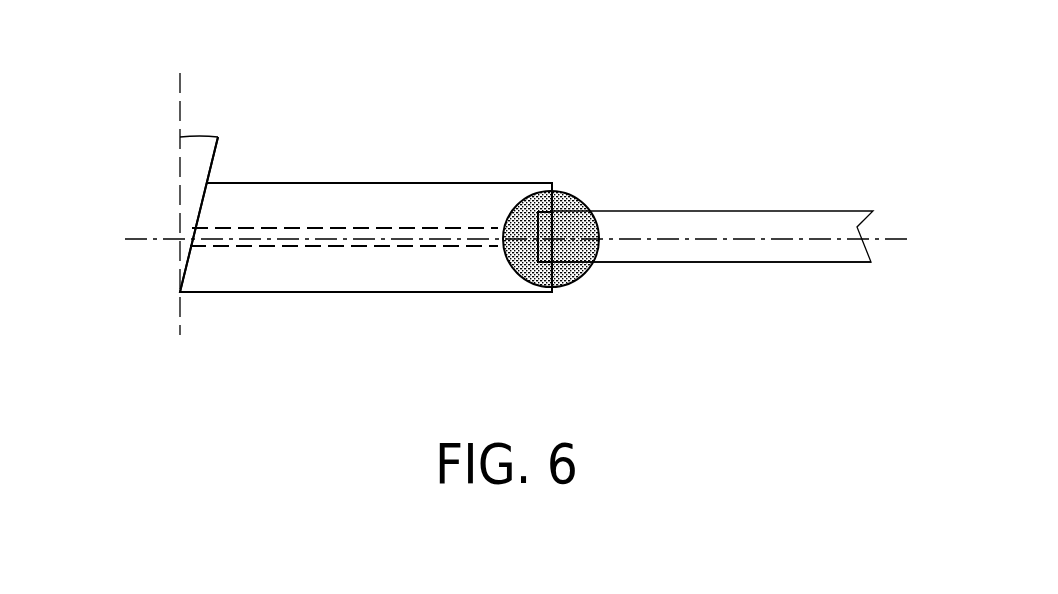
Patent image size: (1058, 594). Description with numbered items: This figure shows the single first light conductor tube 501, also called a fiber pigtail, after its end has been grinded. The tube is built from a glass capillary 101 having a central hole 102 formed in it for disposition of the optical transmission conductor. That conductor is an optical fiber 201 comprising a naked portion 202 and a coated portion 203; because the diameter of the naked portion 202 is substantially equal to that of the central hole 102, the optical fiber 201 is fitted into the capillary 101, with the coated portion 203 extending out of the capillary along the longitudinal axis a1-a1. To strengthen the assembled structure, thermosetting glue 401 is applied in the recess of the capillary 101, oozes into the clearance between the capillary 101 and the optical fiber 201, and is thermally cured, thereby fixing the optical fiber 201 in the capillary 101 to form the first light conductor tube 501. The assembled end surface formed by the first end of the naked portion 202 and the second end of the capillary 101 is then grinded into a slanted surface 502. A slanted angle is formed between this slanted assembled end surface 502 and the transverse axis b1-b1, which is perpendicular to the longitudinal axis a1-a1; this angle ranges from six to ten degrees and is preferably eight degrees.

The capillary 101 is at (398, 183).
The central hole 102 is at (293, 226).
The optical fiber 201 is at (740, 210).
The naked portion 202 is at (360, 248).
The coated portion 203 is at (722, 252).
The thermosetting glue 401 is at (568, 272).
The first light conductor tube 501 is at (548, 166).
The slanted surface 502 is at (204, 197).
The longitudinal axis a1 is at (515, 238).
The transverse axis b1 is at (188, 205).